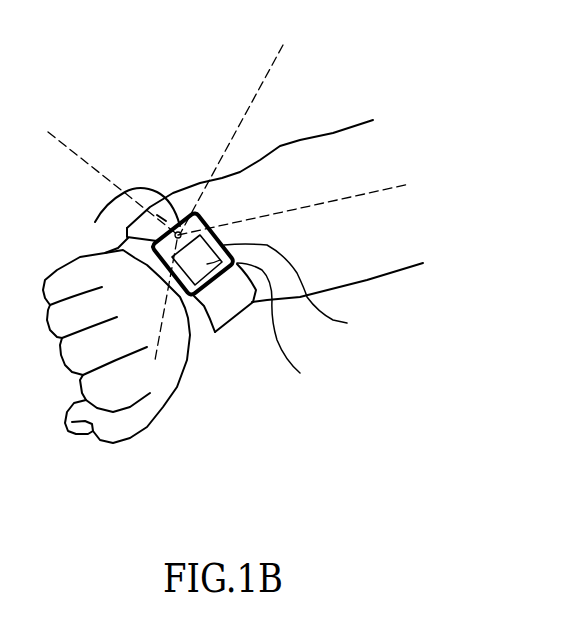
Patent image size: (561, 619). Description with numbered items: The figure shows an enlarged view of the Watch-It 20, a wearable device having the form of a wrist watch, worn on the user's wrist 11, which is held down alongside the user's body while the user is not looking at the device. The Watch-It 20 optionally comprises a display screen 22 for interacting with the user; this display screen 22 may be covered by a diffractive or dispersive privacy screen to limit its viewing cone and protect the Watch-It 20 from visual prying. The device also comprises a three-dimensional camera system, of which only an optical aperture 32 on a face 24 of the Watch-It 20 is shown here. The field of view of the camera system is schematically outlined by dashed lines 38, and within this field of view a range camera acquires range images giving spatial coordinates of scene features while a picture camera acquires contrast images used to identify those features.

The wrist 11 is at (252, 305).
The Watch-It 20 is at (226, 212).
The display screen 22 is at (300, 373).
The face 24 is at (305, 291).
The optical aperture 32 is at (125, 192).
The dashed lines 38 is at (232, 140).